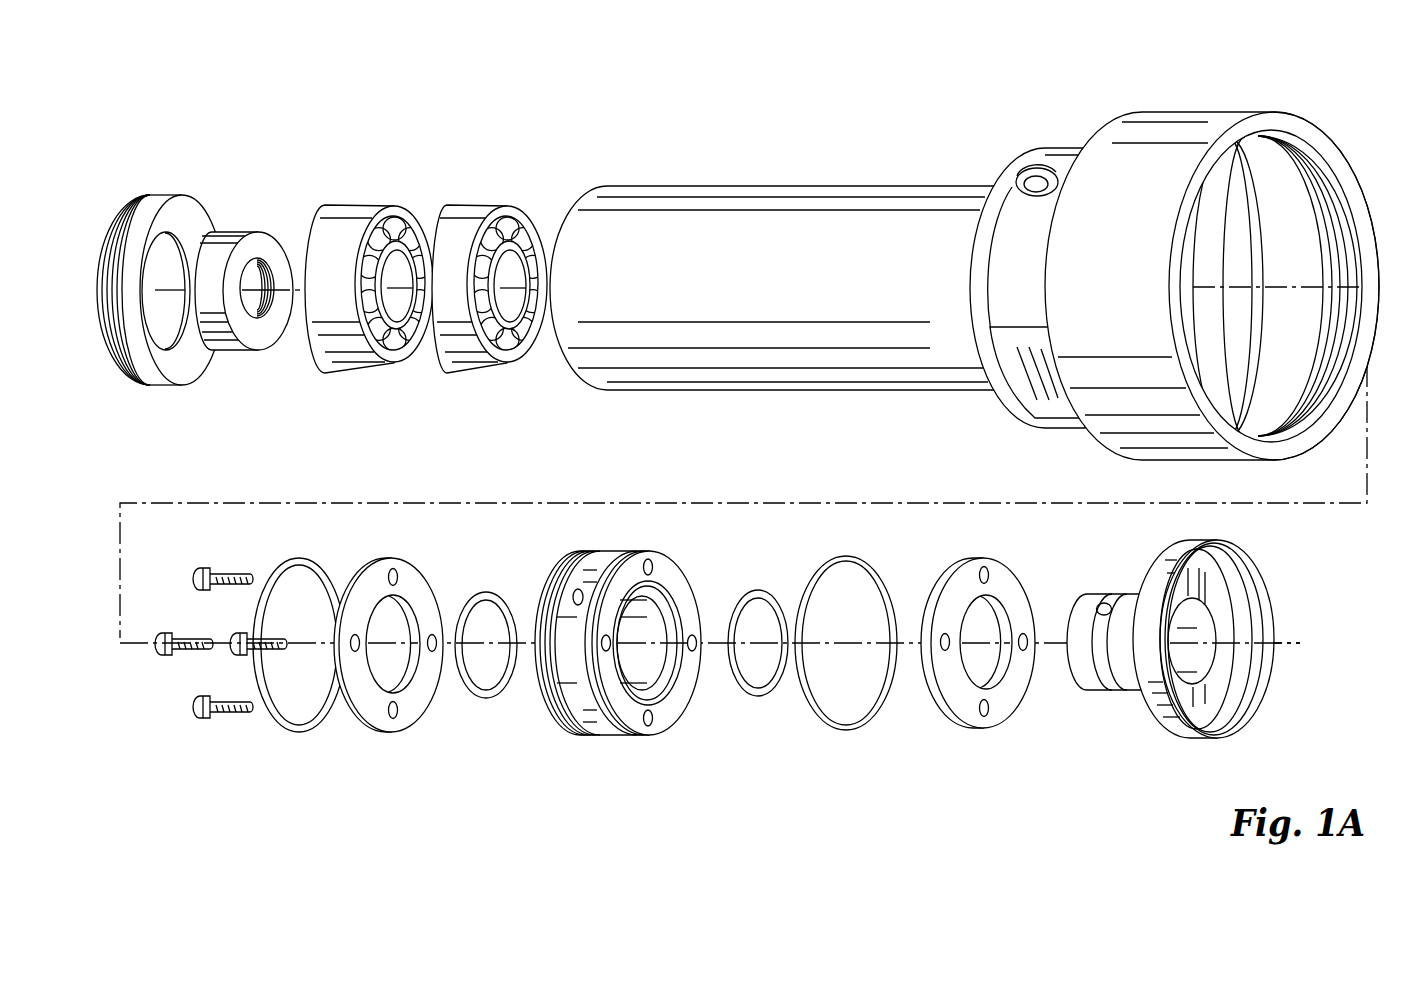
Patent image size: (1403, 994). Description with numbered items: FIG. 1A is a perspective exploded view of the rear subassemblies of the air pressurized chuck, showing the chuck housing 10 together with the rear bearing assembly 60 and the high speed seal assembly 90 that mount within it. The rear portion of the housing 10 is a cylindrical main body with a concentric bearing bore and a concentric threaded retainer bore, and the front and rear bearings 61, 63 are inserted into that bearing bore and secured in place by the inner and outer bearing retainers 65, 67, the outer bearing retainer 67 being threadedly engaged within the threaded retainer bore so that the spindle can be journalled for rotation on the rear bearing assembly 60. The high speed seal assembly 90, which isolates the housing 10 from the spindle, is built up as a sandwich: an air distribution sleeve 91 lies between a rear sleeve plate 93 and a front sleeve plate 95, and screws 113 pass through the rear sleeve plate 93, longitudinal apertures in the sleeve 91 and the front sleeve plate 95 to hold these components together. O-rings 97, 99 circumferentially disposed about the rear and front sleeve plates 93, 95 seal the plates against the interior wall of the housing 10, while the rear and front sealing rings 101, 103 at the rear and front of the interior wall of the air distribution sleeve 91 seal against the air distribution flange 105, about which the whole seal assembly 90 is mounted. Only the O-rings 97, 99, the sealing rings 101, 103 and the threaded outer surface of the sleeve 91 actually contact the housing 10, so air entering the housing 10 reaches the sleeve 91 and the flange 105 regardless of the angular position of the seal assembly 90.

The chuck housing 10 is at (822, 171).
The rear bearing assembly 60 is at (107, 122).
The front bearing 61 is at (467, 213).
The rear bearing 63 is at (357, 213).
The inner bearing retainer 65 is at (265, 240).
The outer bearing retainer 67 is at (177, 207).
The high speed seal assembly 90 is at (1269, 761).
The air distribution sleeve 91 is at (645, 550).
The rear sleeve plate 93 is at (387, 558).
The front sleeve plate 95 is at (988, 560).
The O-ring 97 is at (295, 560).
The O-ring 99 is at (843, 560).
The rear sealing ring 101 is at (483, 597).
The front sealing ring 103 is at (758, 595).
The air distribution flange 105 is at (1213, 550).
The screws 113 is at (220, 572).